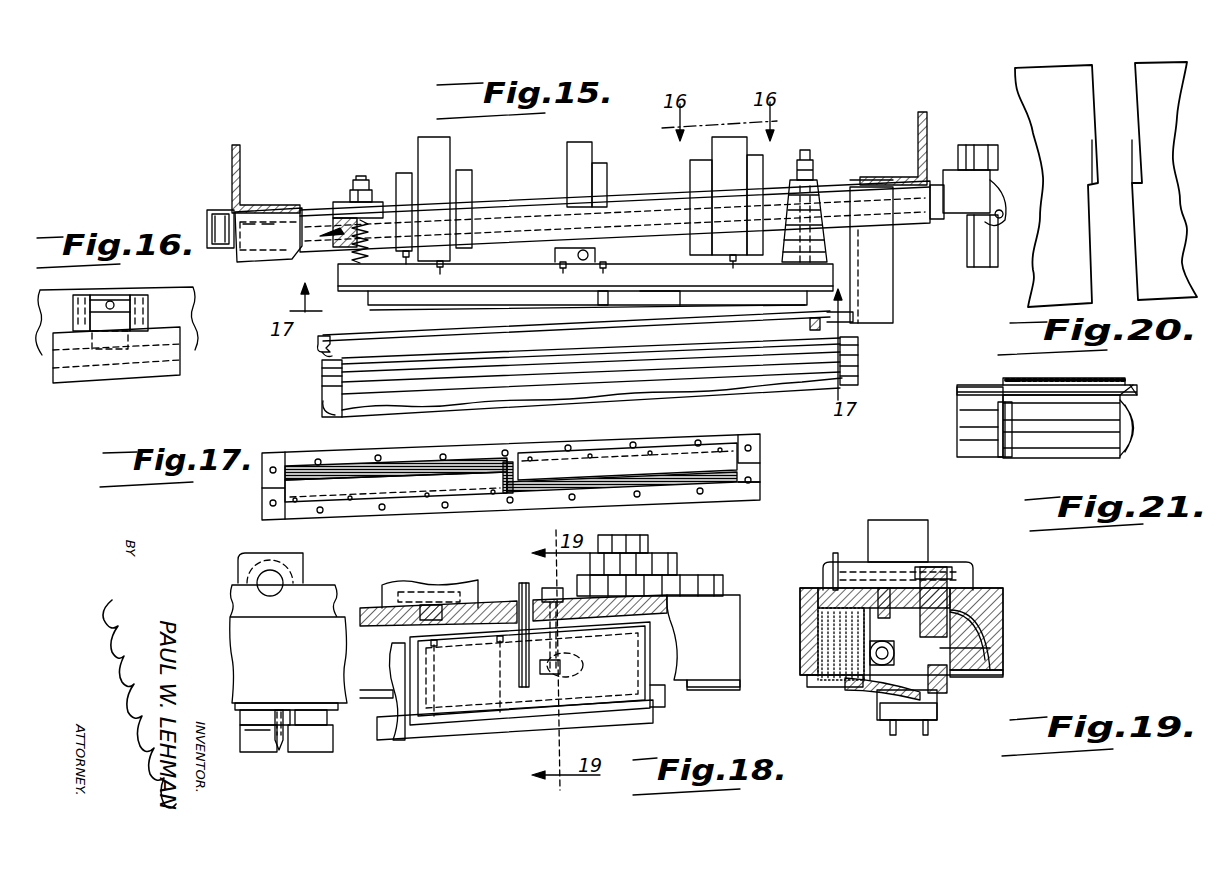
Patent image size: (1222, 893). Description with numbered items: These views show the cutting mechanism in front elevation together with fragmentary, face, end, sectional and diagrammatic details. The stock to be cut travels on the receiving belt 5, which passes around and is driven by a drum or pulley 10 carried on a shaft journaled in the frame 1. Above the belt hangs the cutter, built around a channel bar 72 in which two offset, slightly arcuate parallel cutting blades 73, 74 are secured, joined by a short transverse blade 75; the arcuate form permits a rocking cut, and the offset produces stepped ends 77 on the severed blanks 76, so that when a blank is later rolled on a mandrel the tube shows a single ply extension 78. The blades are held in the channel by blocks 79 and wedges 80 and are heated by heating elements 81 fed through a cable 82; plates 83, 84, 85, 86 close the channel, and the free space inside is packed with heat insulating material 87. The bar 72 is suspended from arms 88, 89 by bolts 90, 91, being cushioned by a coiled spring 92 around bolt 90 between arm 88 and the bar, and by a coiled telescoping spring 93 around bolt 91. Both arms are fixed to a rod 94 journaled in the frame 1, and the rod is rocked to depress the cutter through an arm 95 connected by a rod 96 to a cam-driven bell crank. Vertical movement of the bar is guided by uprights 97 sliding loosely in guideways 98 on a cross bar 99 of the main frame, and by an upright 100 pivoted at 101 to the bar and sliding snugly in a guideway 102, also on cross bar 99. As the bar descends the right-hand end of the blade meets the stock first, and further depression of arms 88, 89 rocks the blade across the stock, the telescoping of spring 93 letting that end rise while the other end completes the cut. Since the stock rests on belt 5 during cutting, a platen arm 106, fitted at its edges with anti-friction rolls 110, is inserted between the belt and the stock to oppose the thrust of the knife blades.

In FIG. 15, the frame 1 is at (234, 162).
In FIG. 15, the receiving belt 5 is at (336, 402).
In FIG. 15, the drum or pulley 10 is at (330, 380).
In FIG. 15, the channel bar 72 is at (350, 277).
In FIG. 16, the channel bar 72 is at (175, 306).
In FIG. 18, the channel bar 72 is at (233, 638).
In FIG. 19, the channel bar 72 is at (999, 596).
In FIG. 15, the cutting blade 73 is at (392, 300).
In FIG. 17, the cutting blade 73 is at (346, 468).
In FIG. 18, the cutting blade 73 is at (261, 752).
In FIG. 19, the cutting blade 73 is at (877, 714).
In FIG. 15, the cutting blade 74 is at (658, 292).
In FIG. 17, the cutting blade 74 is at (722, 490).
In FIG. 18, the cutting blade 74 is at (314, 752).
In FIG. 19, the cutting blade 74 is at (938, 710).
In FIG. 15, the transverse blade 75 is at (610, 292).
In FIG. 17, the transverse blade 75 is at (484, 478).
In FIG. 18, the transverse blade 75 is at (280, 750).
In FIG. 19, the transverse blade 75 is at (925, 726).
In FIG. 20, the blank 76 is at (1037, 83).
In FIG. 20, the stepped end 77 is at (1136, 220).
In FIG. 21, the single ply extension 78 is at (1003, 385).
In FIG. 19, the block 79 is at (975, 648).
In FIG. 18, the wedge 80 is at (320, 726).
In FIG. 19, the wedge 80 is at (947, 692).
In FIG. 18, the heating element 81 is at (410, 720).
In FIG. 19, the heating element 81 is at (900, 640).
In FIG. 18, the cable 82 is at (517, 600).
In FIG. 19, the cable 82 is at (840, 555).
In FIG. 17, the plate 83 is at (760, 450).
In FIG. 18, the plate 83 is at (252, 714).
In FIG. 19, the plate 83 is at (816, 687).
In FIG. 17, the plate 84 is at (760, 480).
In FIG. 19, the plate 84 is at (1000, 677).
In FIG. 17, the plate 85 is at (600, 463).
In FIG. 19, the plate 85 is at (893, 720).
In FIG. 17, the plate 86 is at (397, 487).
In FIG. 19, the heat insulating material 87 is at (987, 634).
In FIG. 15, the arm 88 is at (340, 202).
In FIG. 15, the arm 89 is at (814, 186).
In FIG. 15, the bolt 90 is at (362, 176).
In FIG. 15, the bolt 91 is at (806, 151).
In FIG. 15, the coiled spring 92 is at (356, 241).
In FIG. 15, the coiled telescoping spring 93 is at (872, 256).
In FIG. 18, the coiled telescoping spring 93 is at (702, 570).
In FIG. 15, the rod 94 is at (215, 220).
In FIG. 15, the arm 95 is at (974, 145).
In FIG. 15, the rod 96 is at (974, 262).
In FIG. 15, the upright 97 is at (438, 158).
In FIG. 16, the upright 97 is at (118, 318).
In FIG. 18, the upright 97 is at (450, 587).
In FIG. 19, the upright 97 is at (905, 539).
In FIG. 15, the guideway 98 is at (404, 171).
In FIG. 16, the guideway 98 is at (75, 326).
In FIG. 15, the cross bar 99 is at (501, 207).
In FIG. 16, the cross bar 99 is at (150, 374).
In FIG. 15, the upright 100 is at (580, 147).
In FIG. 18, the upright 100 is at (298, 558).
In FIG. 15, the pivot 101 is at (557, 256).
In FIG. 18, the pivot 101 is at (270, 583).
In FIG. 15, the guideway 102 is at (599, 178).
In FIG. 15, the arm 106 is at (322, 358).
In FIG. 15, the anti-friction roll 110 is at (318, 346).